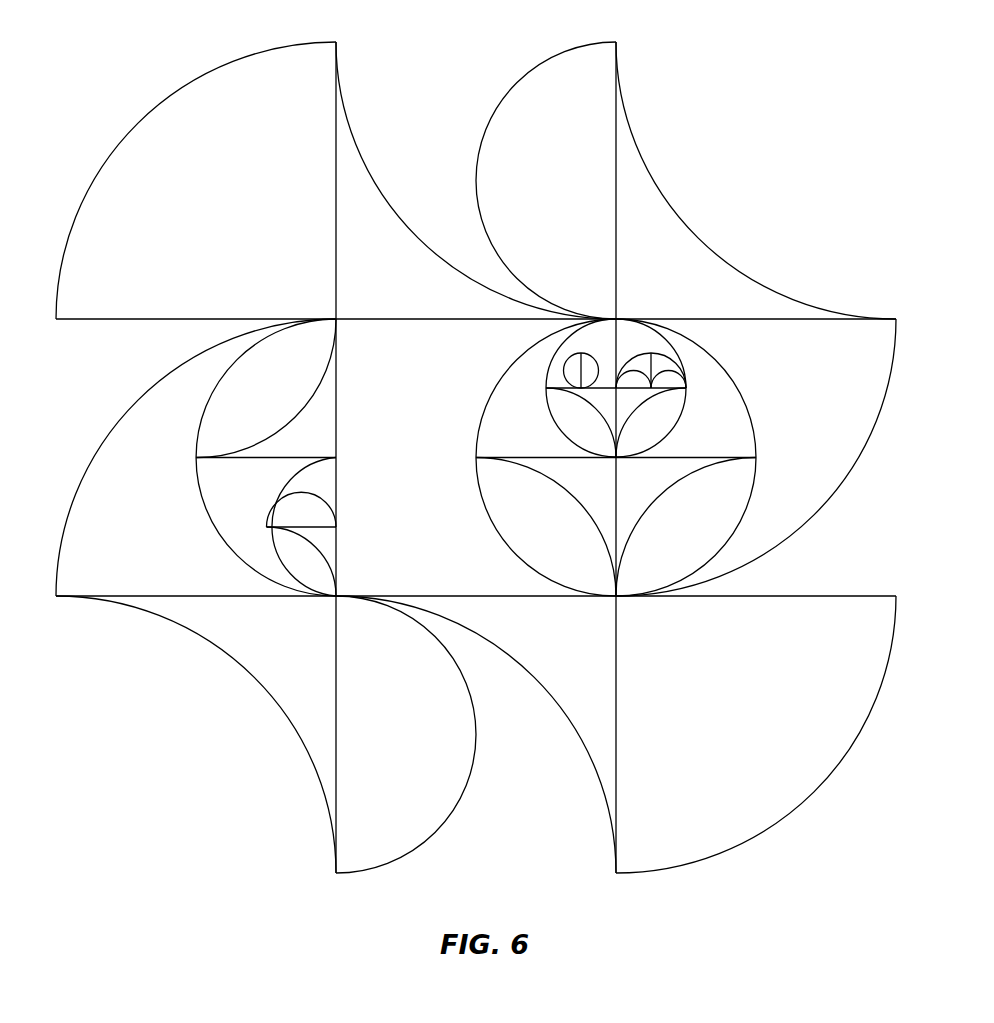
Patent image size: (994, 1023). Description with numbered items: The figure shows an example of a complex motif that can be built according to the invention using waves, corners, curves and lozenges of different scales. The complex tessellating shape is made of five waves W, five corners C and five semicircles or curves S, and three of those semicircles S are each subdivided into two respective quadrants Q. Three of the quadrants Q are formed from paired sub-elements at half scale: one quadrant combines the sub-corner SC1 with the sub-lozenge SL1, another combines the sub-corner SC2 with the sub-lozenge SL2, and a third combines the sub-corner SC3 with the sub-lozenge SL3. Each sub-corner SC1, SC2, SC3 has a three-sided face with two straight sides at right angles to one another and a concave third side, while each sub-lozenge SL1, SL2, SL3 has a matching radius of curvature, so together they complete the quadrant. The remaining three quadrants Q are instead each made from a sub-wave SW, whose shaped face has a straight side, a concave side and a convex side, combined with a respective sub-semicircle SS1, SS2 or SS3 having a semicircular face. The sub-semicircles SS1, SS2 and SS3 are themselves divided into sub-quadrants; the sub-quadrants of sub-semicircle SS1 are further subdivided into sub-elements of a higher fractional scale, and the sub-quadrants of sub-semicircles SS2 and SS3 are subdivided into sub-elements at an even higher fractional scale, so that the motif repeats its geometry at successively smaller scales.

The wave W is at (217, 68).
The semicircle S is at (505, 96).
The corner C is at (385, 199).
The quadrant Q is at (199, 426).
The sub-lozenge SL1 is at (282, 405).
The sub-lozenge SL2 is at (567, 543).
The sub-lozenge SL3 is at (709, 543).
The sub-corner SC1 is at (328, 453).
The sub-corner SC2 is at (611, 490).
The sub-corner SC3 is at (664, 490).
The sub-wave SW is at (257, 503).
The sub-semicircle SS1 is at (268, 547).
The sub-semicircle SS2 is at (556, 352).
The sub-semicircle SS3 is at (682, 366).